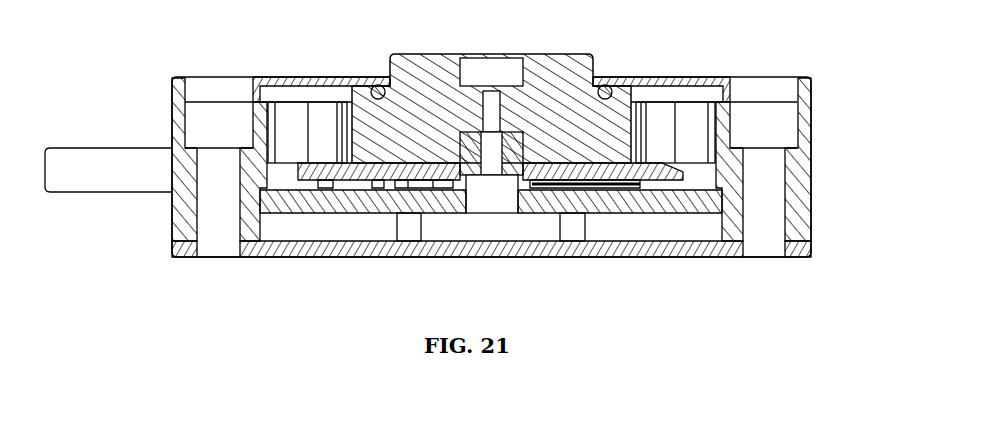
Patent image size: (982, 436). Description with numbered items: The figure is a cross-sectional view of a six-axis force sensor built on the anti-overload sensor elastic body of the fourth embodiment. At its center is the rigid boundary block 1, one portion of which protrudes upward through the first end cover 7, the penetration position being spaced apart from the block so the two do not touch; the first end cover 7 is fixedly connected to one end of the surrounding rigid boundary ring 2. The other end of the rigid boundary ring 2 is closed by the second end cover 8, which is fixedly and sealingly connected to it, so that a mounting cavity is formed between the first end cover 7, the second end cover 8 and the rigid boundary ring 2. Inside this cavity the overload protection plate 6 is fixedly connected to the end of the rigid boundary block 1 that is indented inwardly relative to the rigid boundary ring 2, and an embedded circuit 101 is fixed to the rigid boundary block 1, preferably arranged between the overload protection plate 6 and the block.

The rigid boundary block 1 is at (558, 78).
The rigid boundary ring 2 is at (186, 214).
The overload protection plate 6 is at (433, 203).
The first end cover 7 is at (303, 86).
The second end cover 8 is at (345, 244).
The embedded circuit 101 is at (663, 168).